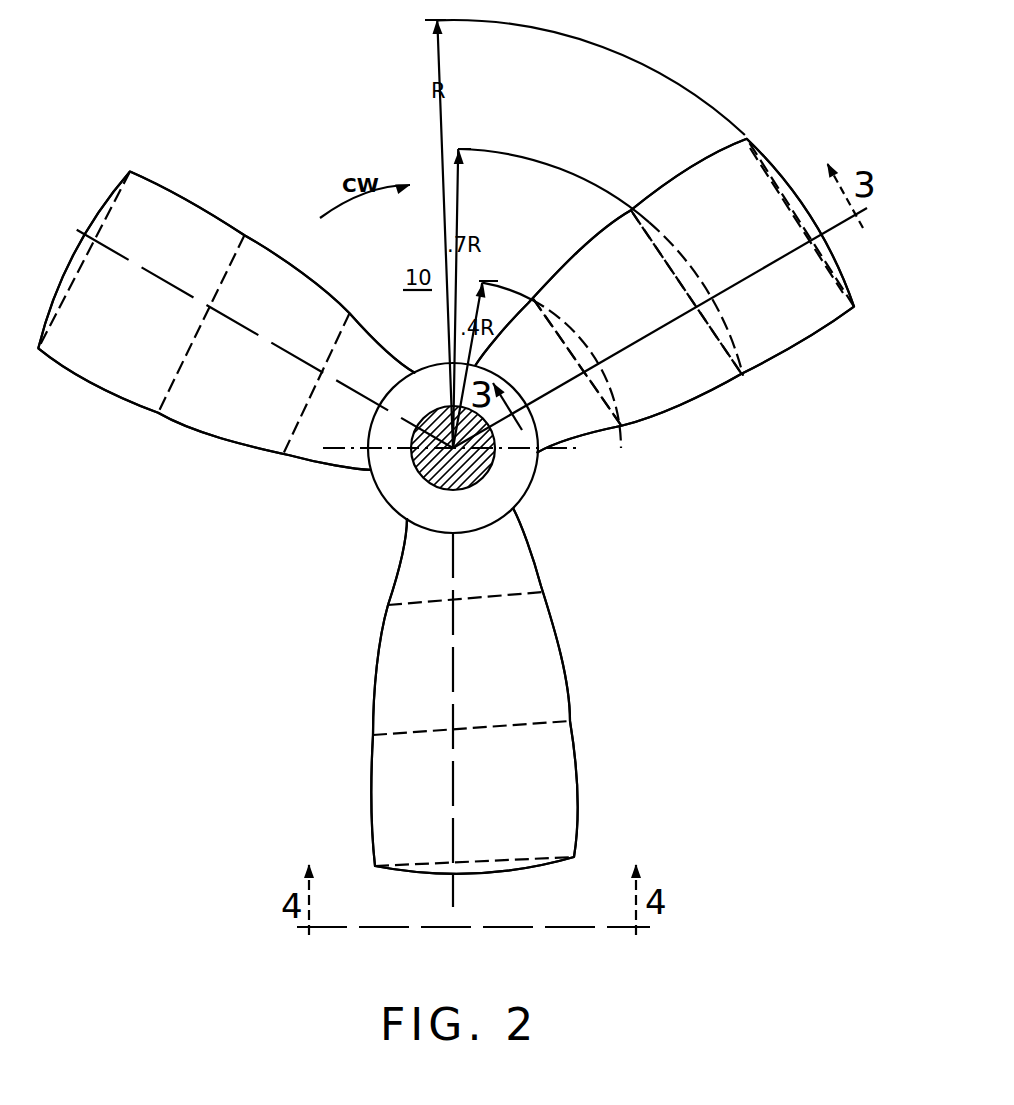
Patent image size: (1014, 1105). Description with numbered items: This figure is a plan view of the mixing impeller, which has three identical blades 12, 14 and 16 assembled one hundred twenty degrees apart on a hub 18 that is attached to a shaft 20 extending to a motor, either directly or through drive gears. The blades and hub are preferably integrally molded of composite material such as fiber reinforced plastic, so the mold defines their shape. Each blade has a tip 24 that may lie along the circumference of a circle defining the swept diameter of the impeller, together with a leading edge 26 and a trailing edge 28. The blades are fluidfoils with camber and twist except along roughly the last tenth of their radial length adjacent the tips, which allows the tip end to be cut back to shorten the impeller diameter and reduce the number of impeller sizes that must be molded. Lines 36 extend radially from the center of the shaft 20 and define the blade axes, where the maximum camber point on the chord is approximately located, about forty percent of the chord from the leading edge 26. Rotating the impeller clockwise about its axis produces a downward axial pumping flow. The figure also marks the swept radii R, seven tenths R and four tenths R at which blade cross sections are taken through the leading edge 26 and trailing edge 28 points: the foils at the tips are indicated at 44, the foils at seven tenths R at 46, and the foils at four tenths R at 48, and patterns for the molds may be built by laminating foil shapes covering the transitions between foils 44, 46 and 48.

The blade 12 is at (657, 380).
The blade 14 is at (550, 695).
The blade 16 is at (168, 208).
The hub 18 is at (523, 497).
The shaft 20 is at (480, 467).
The blade tips 24 is at (538, 868).
The leading edges 26 is at (370, 777).
The trailing edges 28 is at (581, 764).
The lines 36 is at (454, 654).
The foils at the tips 44 is at (782, 198).
The foils at 0.7 R 46 is at (645, 242).
The foils at 0.4 R 48 is at (560, 343).